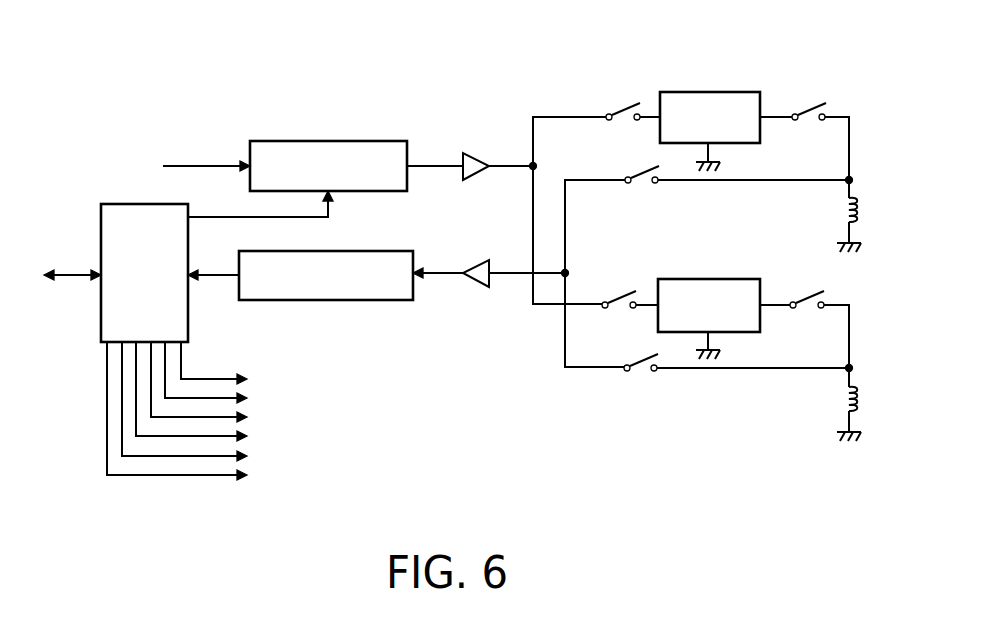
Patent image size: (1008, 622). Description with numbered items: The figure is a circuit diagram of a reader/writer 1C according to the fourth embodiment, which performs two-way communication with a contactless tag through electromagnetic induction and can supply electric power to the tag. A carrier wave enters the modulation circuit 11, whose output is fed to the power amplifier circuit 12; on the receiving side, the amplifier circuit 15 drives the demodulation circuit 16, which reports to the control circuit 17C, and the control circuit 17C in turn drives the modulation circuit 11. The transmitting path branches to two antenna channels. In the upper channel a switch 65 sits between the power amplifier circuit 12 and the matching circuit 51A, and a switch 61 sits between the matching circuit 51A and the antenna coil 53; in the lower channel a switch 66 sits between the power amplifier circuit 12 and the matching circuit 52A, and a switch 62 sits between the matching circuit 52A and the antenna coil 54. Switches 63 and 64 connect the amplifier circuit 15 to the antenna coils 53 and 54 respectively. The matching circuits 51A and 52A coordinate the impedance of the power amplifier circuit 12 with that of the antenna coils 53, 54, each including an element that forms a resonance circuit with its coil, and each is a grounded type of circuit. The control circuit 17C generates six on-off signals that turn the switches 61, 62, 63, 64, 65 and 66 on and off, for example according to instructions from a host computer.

The reader/writer 1C is at (834, 72).
The control circuit 17C is at (115, 204).
The modulation circuit 11 is at (380, 141).
The demodulation circuit 16 is at (380, 251).
The power amplifier circuit 12 is at (478, 153).
The amplifier circuit 15 is at (478, 260).
The switch 65 is at (620, 110).
The switch 63 is at (640, 173).
The switch 66 is at (620, 298).
The switch 64 is at (640, 361).
The switch 61 is at (808, 110).
The switch 62 is at (808, 298).
The matching circuit 51A is at (693, 92).
The matching circuit 52A is at (693, 279).
The antenna coil 53 is at (843, 225).
The antenna coil 54 is at (843, 414).